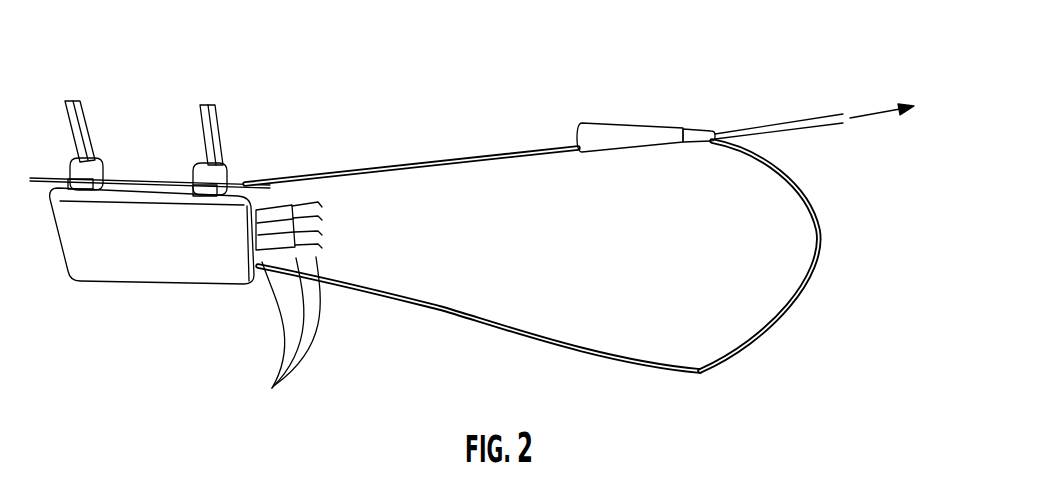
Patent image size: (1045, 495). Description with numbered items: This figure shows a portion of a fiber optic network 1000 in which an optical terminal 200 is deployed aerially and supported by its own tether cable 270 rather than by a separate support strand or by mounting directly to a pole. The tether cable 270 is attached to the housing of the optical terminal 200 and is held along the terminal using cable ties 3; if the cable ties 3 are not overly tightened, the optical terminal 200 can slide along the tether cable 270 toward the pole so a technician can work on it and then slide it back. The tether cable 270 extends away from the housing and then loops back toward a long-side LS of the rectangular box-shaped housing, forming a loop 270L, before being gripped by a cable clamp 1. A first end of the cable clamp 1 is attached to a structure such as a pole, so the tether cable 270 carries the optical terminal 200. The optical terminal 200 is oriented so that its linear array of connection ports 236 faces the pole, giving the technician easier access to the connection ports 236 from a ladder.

The fiber optic network 1000 is at (250, 109).
The cable clamp 1 is at (655, 127).
The cable ties 3 is at (83, 152).
The long-side LS is at (240, 185).
The optical terminal 200 is at (192, 270).
The connection ports 236 is at (286, 339).
The tether cable 270 is at (338, 171).
The loop 270L is at (778, 325).